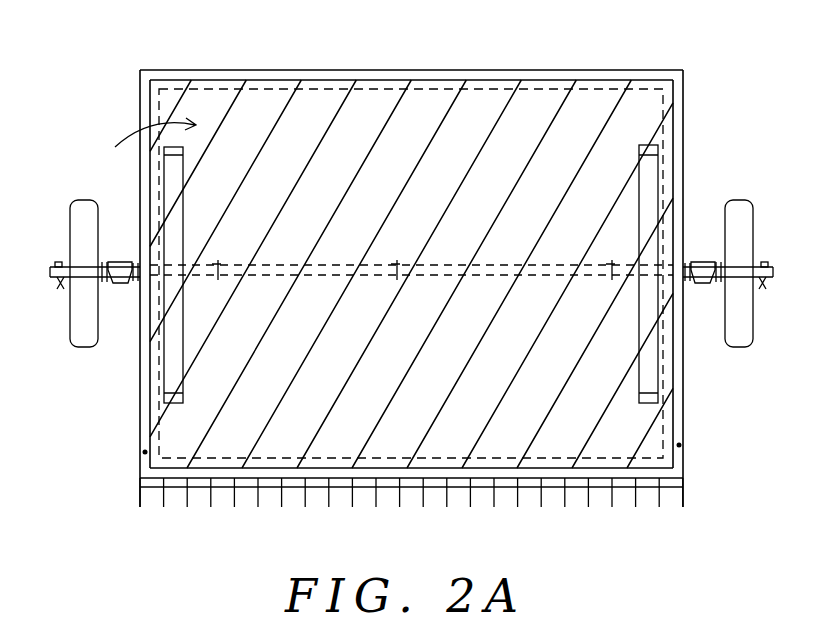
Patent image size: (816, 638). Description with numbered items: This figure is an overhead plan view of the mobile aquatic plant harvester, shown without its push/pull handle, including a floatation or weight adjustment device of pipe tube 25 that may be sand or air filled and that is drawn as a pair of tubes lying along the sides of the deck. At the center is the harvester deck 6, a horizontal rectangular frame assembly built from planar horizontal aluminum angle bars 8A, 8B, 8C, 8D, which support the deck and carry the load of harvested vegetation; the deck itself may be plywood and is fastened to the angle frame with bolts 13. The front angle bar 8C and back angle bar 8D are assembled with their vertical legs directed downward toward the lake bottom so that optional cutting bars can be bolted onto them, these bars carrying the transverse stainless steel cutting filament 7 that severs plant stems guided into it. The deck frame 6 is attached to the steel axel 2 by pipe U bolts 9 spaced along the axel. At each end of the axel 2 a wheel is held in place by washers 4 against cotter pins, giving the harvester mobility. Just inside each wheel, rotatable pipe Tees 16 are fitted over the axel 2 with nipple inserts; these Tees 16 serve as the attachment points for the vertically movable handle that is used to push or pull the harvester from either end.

The axel 2 is at (50, 268).
The washers 4 is at (107, 262).
The harvester deck 6 is at (146, 139).
The transverse stainless steel cutting filament 7 is at (462, 490).
The horizontal aluminum angle bar 8A is at (145, 443).
The horizontal aluminum angle bar 8B is at (678, 107).
The front aluminum angle bar 8C is at (390, 470).
The back aluminum angle bar 8D is at (360, 72).
The pipe U bolts 9 is at (218, 263).
The bolts 13 is at (145, 452).
The pipe Tees 16 is at (122, 285).
The support bars 25 is at (648, 177).